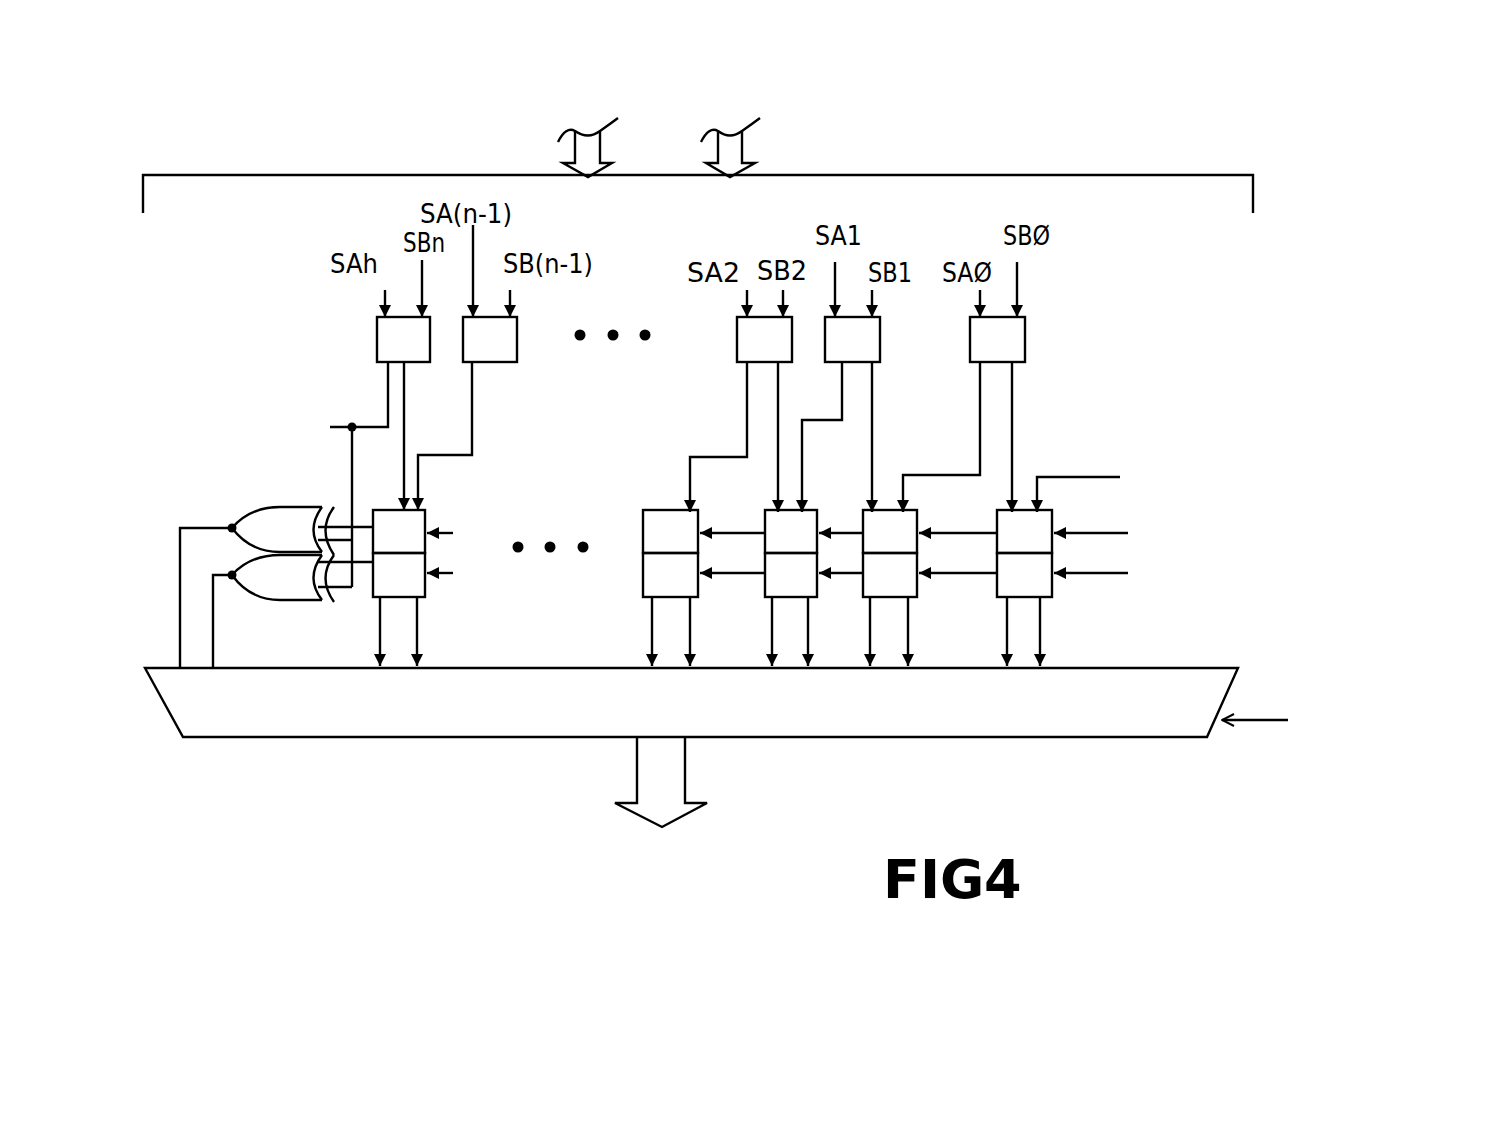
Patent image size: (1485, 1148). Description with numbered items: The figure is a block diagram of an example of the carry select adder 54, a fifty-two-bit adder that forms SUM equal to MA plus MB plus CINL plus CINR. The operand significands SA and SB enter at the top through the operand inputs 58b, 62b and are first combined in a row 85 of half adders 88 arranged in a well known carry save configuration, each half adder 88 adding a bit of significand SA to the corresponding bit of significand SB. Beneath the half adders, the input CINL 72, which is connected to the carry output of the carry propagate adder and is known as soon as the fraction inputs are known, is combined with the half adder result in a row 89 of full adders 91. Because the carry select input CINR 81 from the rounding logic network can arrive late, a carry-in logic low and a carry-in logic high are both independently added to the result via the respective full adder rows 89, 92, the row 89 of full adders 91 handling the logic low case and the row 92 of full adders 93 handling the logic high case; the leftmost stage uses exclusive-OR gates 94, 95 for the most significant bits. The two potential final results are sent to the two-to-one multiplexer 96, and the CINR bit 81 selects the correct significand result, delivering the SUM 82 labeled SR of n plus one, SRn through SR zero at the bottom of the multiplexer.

The carry select adder 54 is at (1300, 175).
The first operand input 58b is at (603, 150).
The second operand input 62b is at (745, 152).
The row of half adders 85 is at (1102, 335).
The half adder 88 is at (377, 337).
The input CINL 72 is at (1055, 476).
The row of full adders 89 is at (1209, 519).
The full adder row 92 is at (1200, 577).
The full adder 91 is at (425, 537).
The full adder (carry-in one) 93 is at (427, 587).
The exclusive-OR gate 94 is at (287, 507).
The exclusive-OR gate 95 is at (280, 602).
The carry select input CINR 81 is at (1260, 718).
The SUM 82 is at (685, 767).
The two-to-one multiplexer 96 is at (1212, 730).